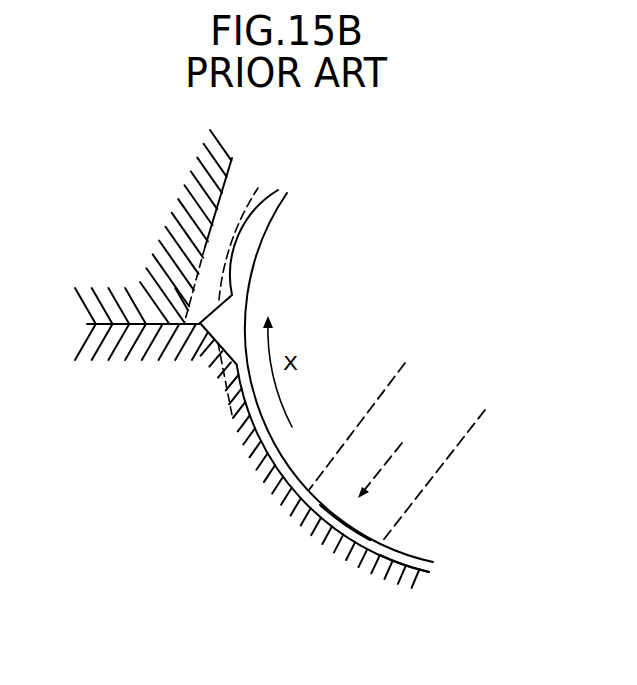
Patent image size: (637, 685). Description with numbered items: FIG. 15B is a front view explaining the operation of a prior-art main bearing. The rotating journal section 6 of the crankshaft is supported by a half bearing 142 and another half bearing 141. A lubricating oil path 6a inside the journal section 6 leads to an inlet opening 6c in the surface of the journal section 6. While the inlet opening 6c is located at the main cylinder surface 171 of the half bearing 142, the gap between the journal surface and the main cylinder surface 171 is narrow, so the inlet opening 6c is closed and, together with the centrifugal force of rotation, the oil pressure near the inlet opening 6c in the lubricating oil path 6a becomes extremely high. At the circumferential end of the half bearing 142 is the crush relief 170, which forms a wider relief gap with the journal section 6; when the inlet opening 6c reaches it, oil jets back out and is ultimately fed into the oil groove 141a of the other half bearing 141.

The half bearing 141 is at (135, 208).
The oil groove 141a is at (250, 184).
The half bearing 142 is at (176, 451).
The journal section 6 is at (388, 260).
The lubricating oil path 6a is at (438, 428).
The crush relief 170 is at (243, 380).
The main cylinder surface 171 is at (405, 553).
The inlet opening 6c is at (343, 527).